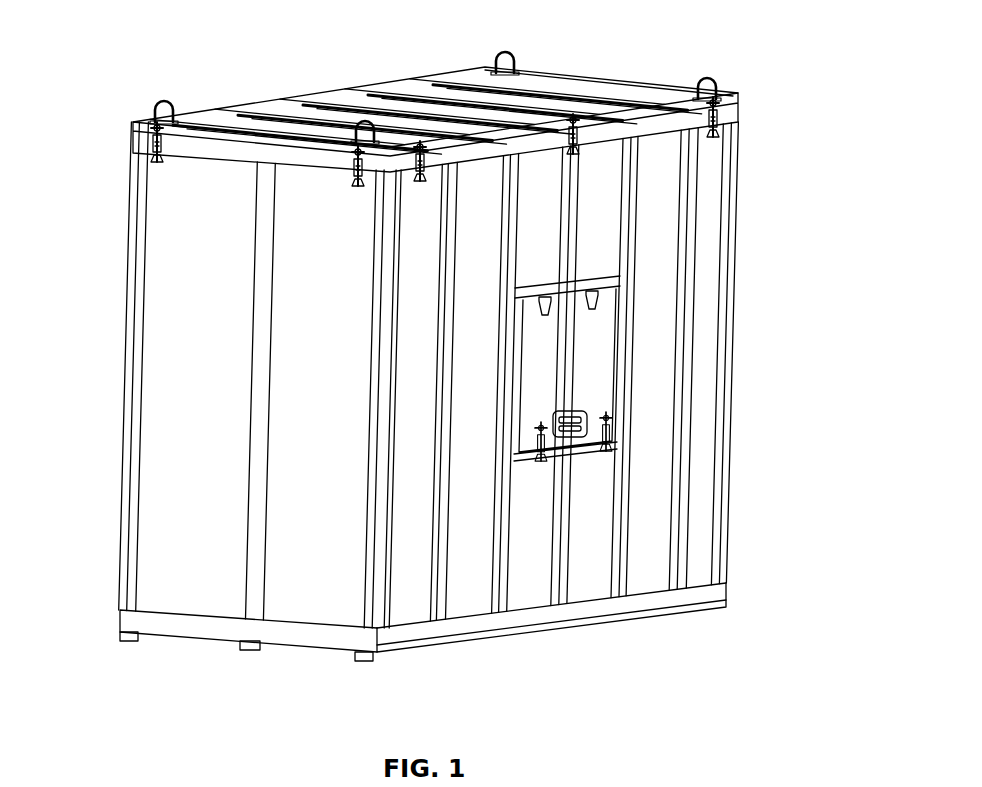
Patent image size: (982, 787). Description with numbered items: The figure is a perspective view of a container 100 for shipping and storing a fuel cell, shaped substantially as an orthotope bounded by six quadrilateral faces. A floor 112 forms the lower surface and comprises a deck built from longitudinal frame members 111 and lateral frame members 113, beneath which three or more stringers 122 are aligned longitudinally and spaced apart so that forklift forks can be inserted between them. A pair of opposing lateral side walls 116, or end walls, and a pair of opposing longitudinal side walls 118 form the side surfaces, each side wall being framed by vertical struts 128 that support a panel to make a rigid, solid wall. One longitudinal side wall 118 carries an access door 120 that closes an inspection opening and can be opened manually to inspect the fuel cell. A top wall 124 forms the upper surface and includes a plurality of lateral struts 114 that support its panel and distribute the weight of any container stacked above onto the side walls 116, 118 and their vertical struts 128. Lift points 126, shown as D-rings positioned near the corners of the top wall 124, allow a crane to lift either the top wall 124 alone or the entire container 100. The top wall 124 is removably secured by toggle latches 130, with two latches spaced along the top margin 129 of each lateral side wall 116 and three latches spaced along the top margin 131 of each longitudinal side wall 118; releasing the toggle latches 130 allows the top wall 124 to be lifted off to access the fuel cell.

The container 100 is at (232, 44).
The longitudinal frame members 111 is at (484, 620).
The floor 112 is at (568, 640).
The lateral frame members 113 is at (323, 637).
The lateral struts 114 is at (554, 97).
The lateral side walls 116 is at (179, 480).
The longitudinal side walls 118 is at (659, 470).
The access door 120 is at (590, 369).
The stringers 122 is at (127, 645).
The top wall 124 is at (359, 76).
The lift points 126 is at (729, 70).
The vertical struts 128 is at (705, 162).
The top margin 129 is at (218, 150).
The toggle latches 130 is at (737, 117).
The top margin 131 is at (666, 111).